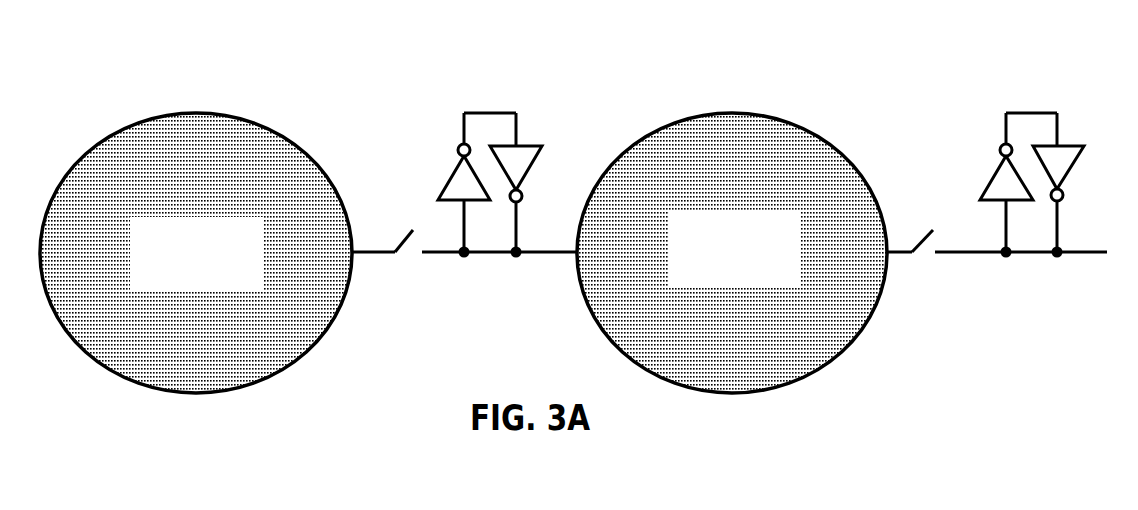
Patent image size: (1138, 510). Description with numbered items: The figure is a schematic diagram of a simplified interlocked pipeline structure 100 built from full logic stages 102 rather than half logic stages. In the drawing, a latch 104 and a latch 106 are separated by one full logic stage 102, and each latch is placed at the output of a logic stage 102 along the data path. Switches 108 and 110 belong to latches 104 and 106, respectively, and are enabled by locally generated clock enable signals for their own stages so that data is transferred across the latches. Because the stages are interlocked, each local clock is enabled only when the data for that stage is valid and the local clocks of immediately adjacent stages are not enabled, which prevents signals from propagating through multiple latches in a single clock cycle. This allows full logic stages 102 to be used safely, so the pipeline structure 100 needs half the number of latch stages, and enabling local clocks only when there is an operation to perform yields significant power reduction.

The pipeline structure 100 is at (647, 68).
The full logic stage 102 is at (283, 135).
The latch 104 is at (505, 100).
The latch 106 is at (1020, 102).
The switch 108 is at (402, 218).
The switch 110 is at (935, 218).